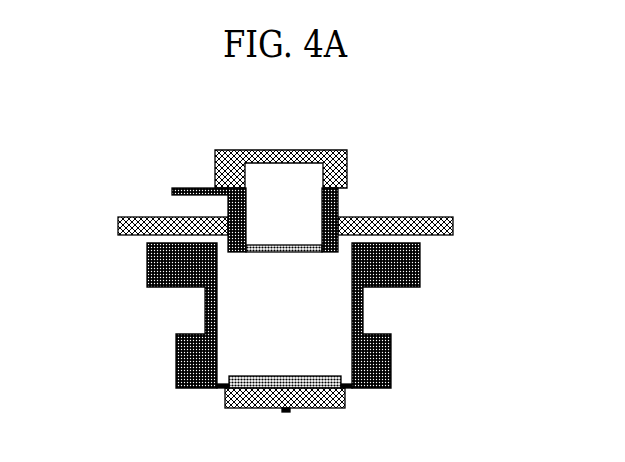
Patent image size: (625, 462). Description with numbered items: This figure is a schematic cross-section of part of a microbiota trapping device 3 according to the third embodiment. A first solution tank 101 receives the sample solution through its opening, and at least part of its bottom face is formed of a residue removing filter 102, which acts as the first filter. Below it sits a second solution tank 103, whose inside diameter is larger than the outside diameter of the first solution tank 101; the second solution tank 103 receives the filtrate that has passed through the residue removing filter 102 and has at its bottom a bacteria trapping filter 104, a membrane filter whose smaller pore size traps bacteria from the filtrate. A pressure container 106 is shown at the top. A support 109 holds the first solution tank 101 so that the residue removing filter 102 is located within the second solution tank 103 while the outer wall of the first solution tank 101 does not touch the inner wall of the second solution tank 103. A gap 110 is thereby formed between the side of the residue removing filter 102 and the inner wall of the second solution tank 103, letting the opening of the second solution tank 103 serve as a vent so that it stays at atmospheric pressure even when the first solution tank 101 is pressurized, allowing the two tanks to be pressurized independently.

The microbiota trapping device 3 is at (466, 286).
The first solution tank 101 is at (173, 191).
The residue removing filter 102 is at (303, 248).
The second solution tank 103 is at (205, 305).
The bacteria trapping filter 104 is at (262, 376).
The pressure container 106 is at (215, 158).
The support 109 is at (118, 226).
The gap 110 is at (343, 254).